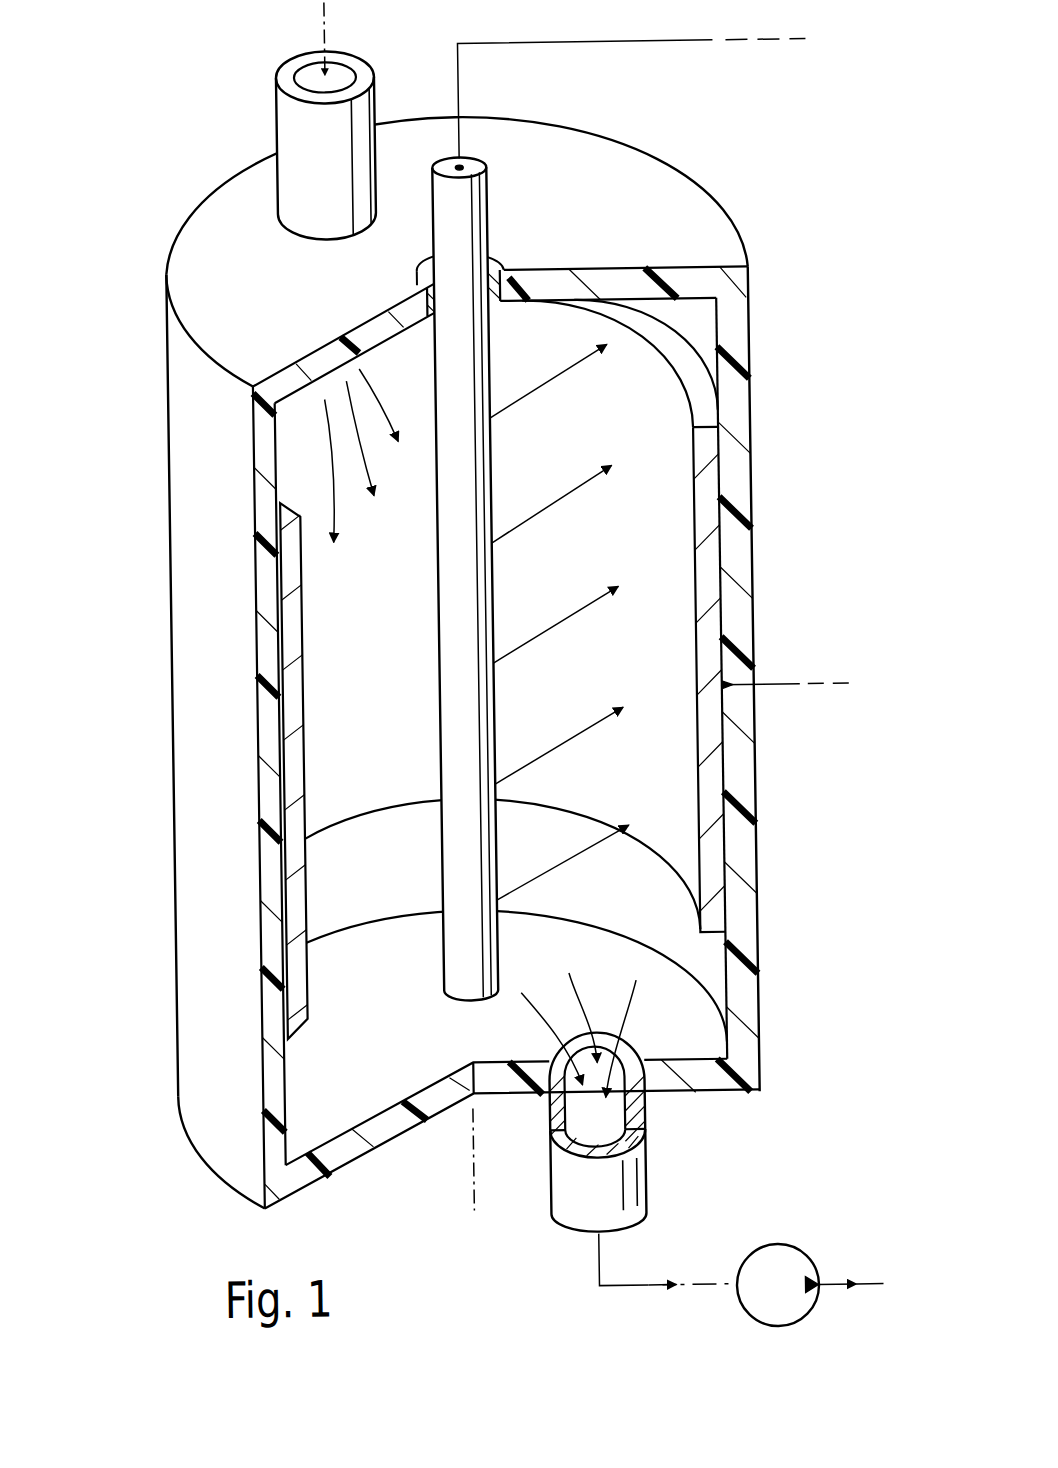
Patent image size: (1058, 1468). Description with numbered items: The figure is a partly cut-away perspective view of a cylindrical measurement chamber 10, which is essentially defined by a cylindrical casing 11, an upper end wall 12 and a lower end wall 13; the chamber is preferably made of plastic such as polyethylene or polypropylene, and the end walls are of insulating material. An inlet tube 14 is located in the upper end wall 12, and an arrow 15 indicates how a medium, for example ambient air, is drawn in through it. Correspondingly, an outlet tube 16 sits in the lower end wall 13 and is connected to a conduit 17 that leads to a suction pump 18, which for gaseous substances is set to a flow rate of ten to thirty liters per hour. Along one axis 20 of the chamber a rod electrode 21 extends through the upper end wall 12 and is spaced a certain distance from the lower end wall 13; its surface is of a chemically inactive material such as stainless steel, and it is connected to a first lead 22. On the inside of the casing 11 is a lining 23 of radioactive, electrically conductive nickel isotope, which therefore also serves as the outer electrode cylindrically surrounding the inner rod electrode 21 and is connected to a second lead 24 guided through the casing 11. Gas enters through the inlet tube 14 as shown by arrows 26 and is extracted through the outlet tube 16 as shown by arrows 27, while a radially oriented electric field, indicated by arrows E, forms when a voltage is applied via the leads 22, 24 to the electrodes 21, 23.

The cylindrical measurement chamber 10 is at (128, 144).
The cylindrical casing 11 is at (190, 391).
The upper end wall 12 is at (238, 205).
The lower end wall 13 is at (318, 1121).
The inlet tube 14 is at (306, 119).
The arrow 15 is at (335, 10).
The outlet tube 16 is at (552, 1191).
The conduit 17 is at (591, 1265).
The suction pump 18 is at (770, 1273).
The axis 20 is at (467, 1162).
The rod electrode 21 is at (449, 624).
The first lead 22 is at (627, 44).
The lining 23 is at (670, 851).
The second lead 24 is at (805, 686).
The arrows 26 is at (336, 467).
The arrows 27 is at (572, 991).
The electric field arrows E is at (551, 511).